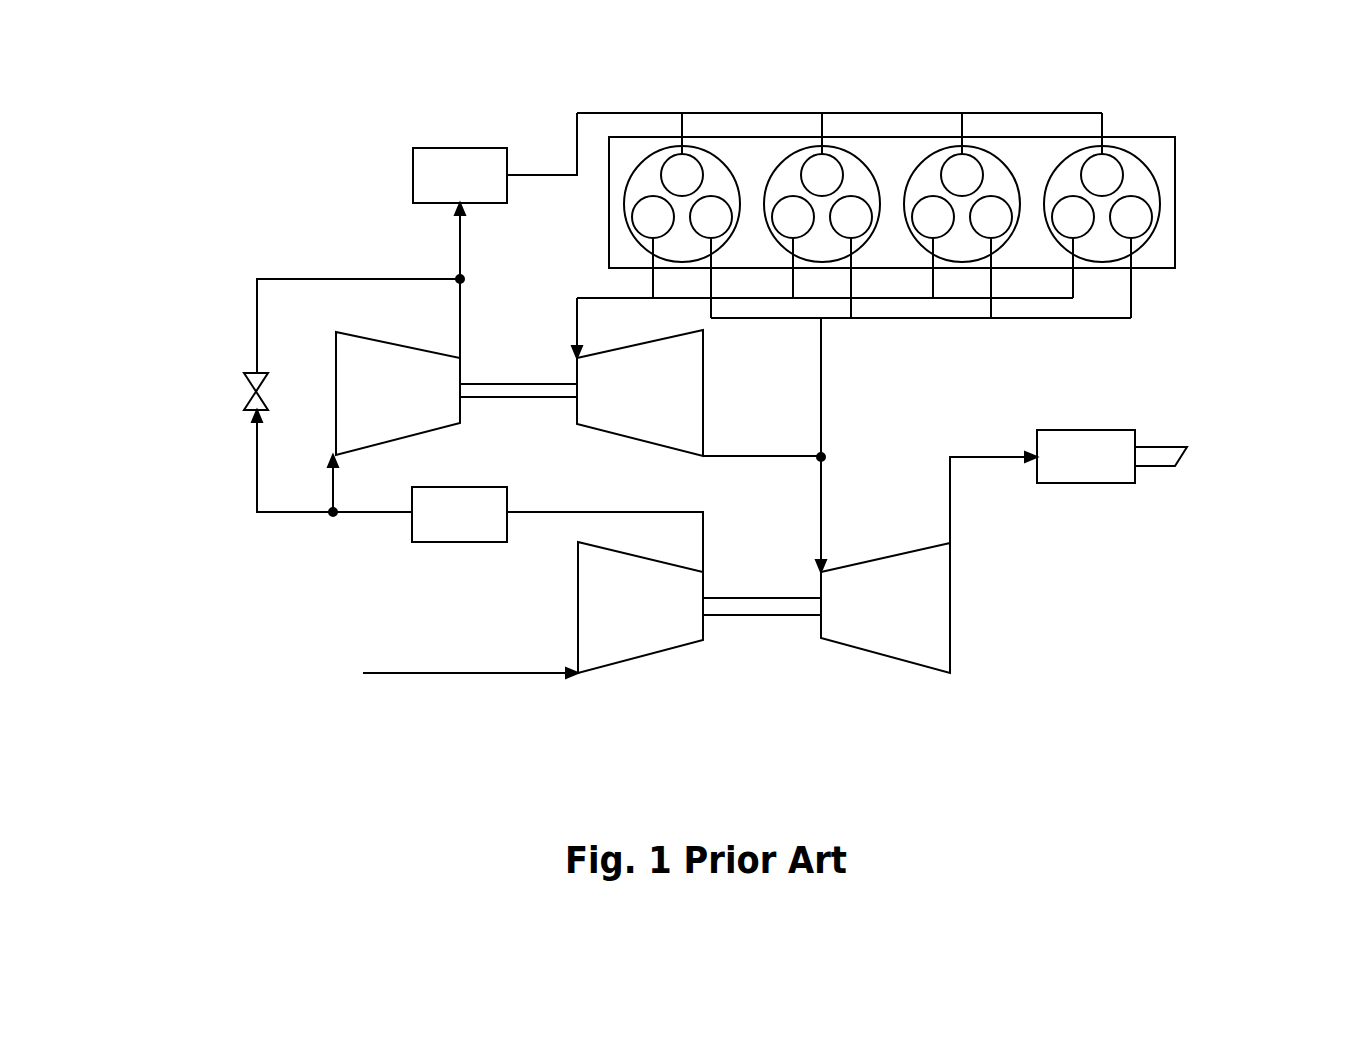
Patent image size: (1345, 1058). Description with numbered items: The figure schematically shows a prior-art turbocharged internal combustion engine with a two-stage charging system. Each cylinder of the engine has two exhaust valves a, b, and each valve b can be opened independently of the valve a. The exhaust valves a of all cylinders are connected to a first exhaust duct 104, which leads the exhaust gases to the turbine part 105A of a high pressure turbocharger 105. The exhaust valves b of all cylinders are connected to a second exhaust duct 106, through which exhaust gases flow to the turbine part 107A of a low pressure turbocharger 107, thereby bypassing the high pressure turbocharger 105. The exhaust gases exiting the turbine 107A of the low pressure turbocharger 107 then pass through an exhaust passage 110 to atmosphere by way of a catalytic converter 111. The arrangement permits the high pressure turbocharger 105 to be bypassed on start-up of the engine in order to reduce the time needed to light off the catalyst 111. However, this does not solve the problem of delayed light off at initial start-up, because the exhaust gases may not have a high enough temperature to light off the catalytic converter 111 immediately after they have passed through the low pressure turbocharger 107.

The exhaust valve a is at (651, 217).
The exhaust valve b is at (712, 217).
The first exhaust duct 104 is at (577, 350).
The high pressure turbocharger 105 is at (365, 338).
The turbine part of high pressure turbocharger 105A is at (607, 400).
The second exhaust duct 106 is at (825, 358).
The low pressure turbocharger 107 is at (573, 598).
The turbine part of low pressure turbocharger 107A is at (893, 615).
The exhaust passage 110 is at (975, 460).
The catalytic converter 111 is at (1110, 450).